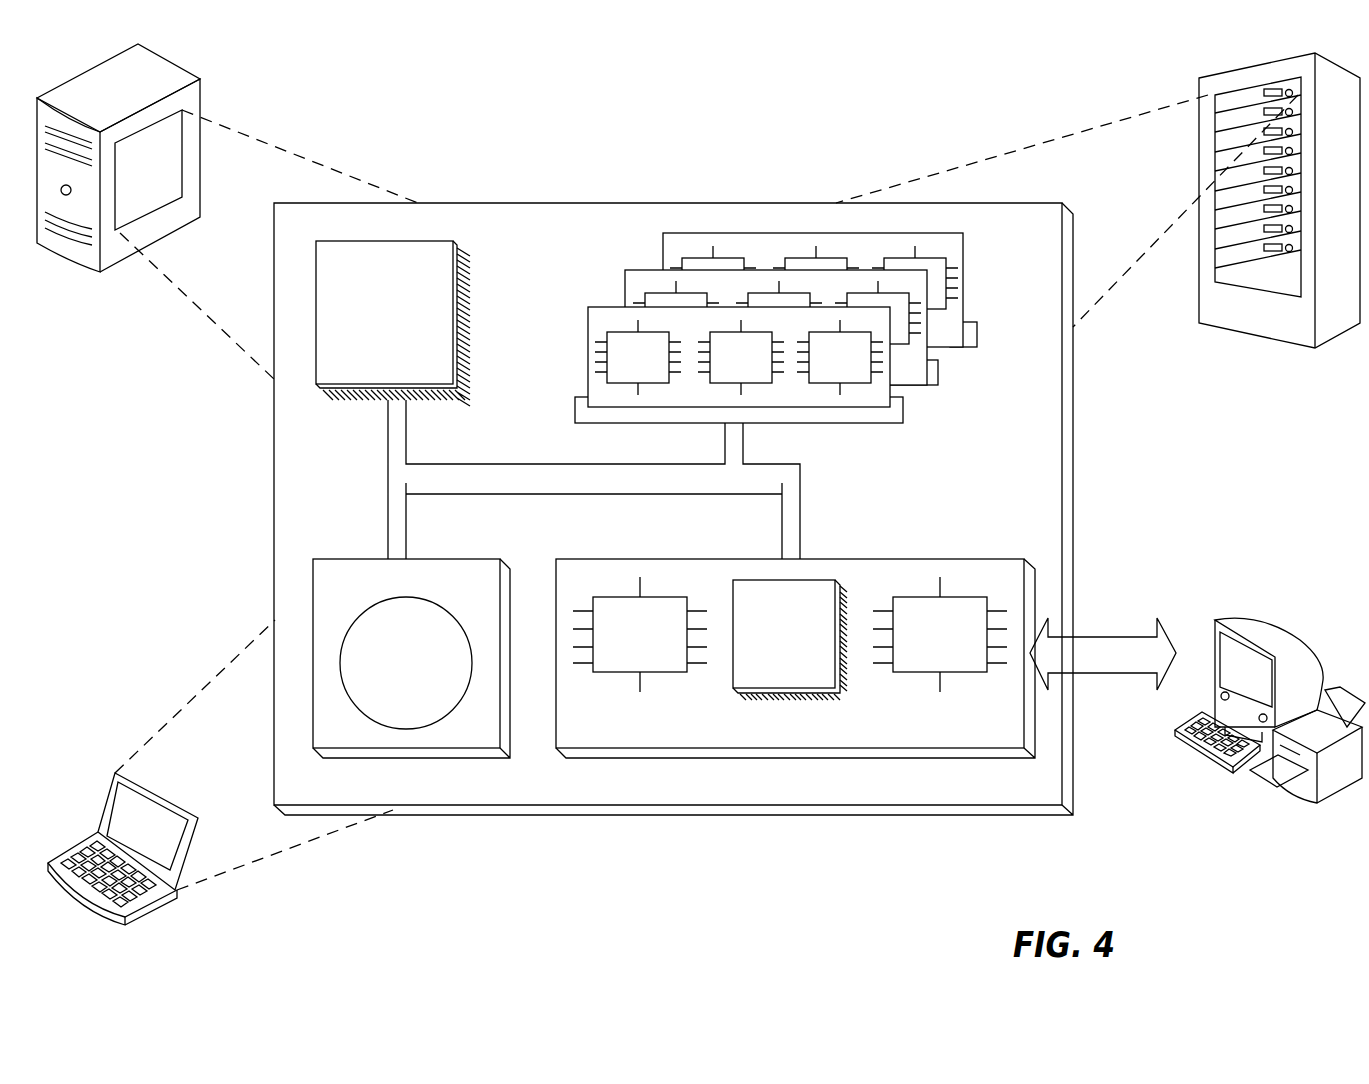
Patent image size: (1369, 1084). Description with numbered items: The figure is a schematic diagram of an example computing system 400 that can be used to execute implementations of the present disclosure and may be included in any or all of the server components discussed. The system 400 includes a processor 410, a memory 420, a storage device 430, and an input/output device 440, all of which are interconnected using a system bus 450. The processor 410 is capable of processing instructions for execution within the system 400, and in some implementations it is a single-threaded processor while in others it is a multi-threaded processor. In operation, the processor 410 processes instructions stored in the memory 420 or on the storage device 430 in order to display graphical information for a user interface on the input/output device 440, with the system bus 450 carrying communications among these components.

The computing system 400 is at (484, 118).
The processor 410 is at (393, 323).
The memory 420 is at (970, 383).
The storage device 430 is at (411, 658).
The input/output device 440 is at (1213, 625).
The system bus 450 is at (588, 483).